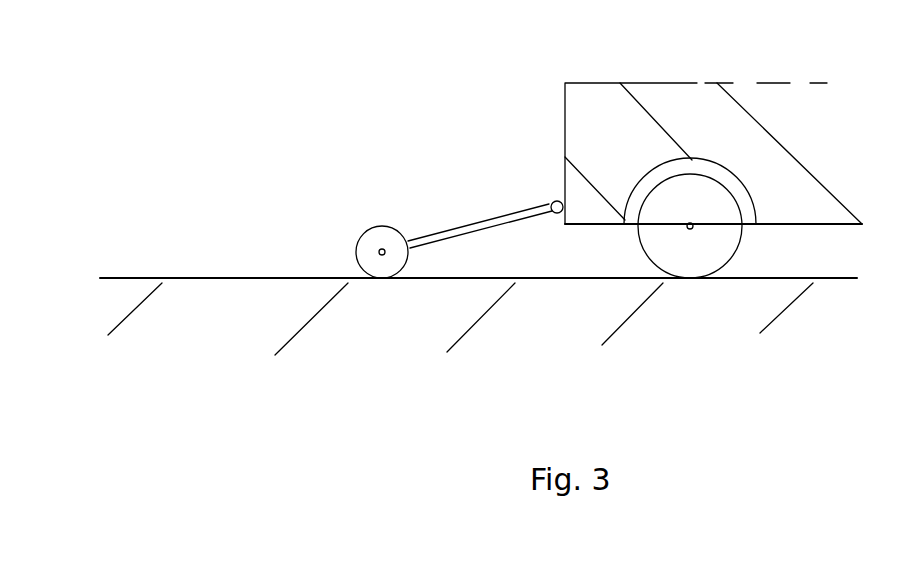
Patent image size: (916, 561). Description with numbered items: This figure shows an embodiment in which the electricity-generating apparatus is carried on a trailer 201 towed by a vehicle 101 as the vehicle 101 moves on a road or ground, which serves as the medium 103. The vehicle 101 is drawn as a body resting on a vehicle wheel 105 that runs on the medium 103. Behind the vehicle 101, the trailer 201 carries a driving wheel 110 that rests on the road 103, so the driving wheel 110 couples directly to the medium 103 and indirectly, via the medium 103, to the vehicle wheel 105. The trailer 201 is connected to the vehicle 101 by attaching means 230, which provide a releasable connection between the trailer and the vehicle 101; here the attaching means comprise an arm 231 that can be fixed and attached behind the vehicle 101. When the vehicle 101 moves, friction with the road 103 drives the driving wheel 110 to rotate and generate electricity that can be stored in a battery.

The vehicle 101 is at (787, 102).
The medium 103 is at (217, 338).
The vehicle wheel 105 is at (728, 242).
The driving wheel 110 is at (370, 242).
The trailer 201 is at (385, 172).
The attaching means 230 is at (551, 201).
The arm 231 is at (500, 217).